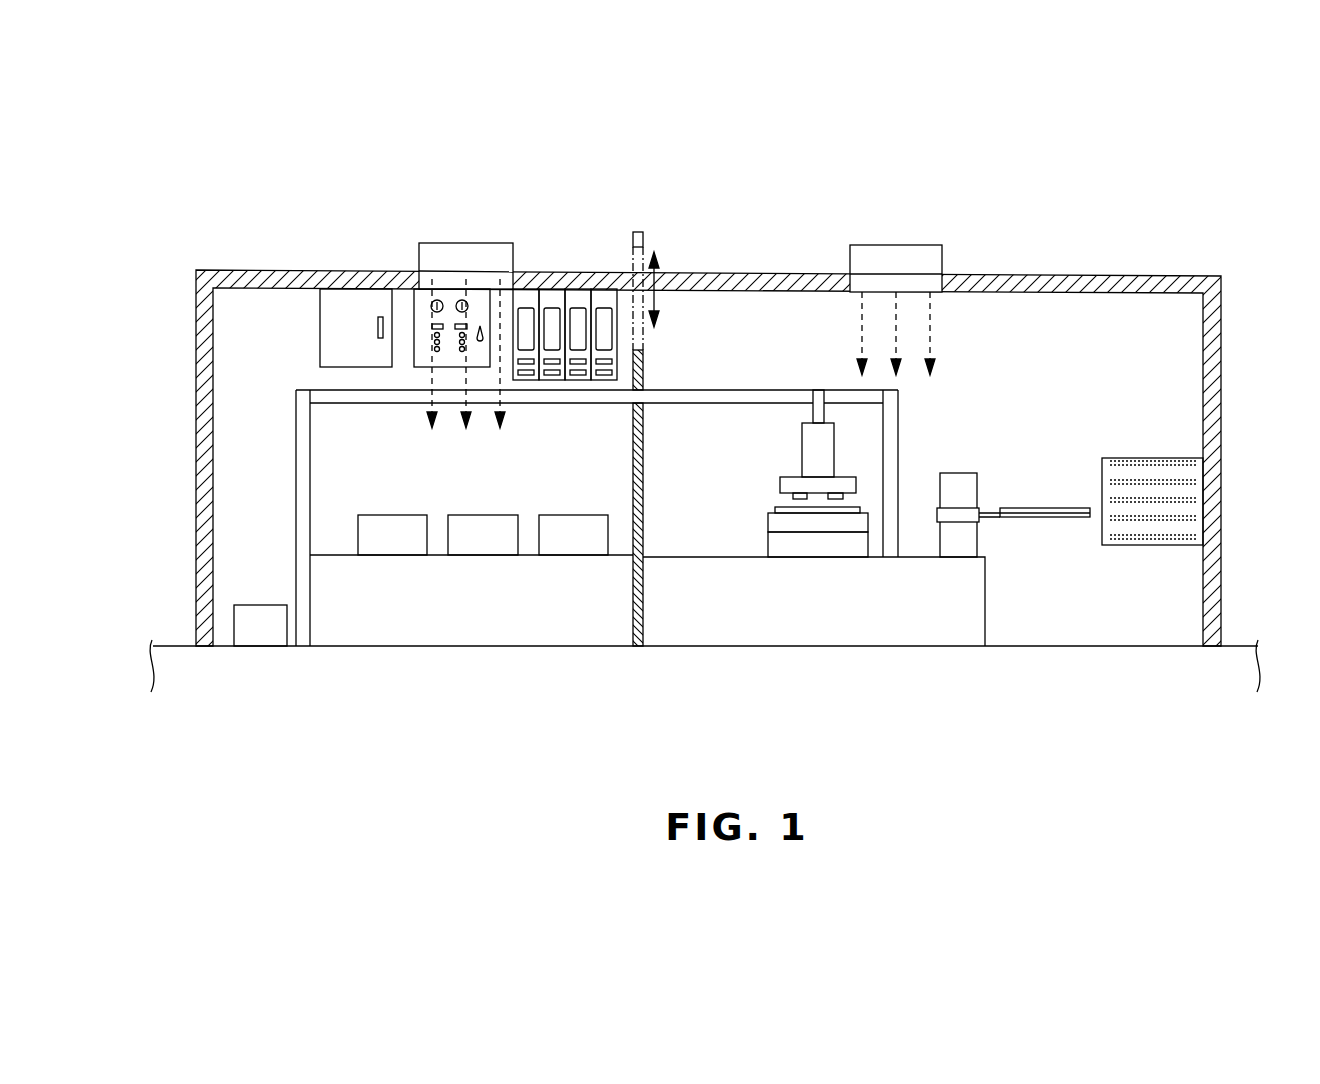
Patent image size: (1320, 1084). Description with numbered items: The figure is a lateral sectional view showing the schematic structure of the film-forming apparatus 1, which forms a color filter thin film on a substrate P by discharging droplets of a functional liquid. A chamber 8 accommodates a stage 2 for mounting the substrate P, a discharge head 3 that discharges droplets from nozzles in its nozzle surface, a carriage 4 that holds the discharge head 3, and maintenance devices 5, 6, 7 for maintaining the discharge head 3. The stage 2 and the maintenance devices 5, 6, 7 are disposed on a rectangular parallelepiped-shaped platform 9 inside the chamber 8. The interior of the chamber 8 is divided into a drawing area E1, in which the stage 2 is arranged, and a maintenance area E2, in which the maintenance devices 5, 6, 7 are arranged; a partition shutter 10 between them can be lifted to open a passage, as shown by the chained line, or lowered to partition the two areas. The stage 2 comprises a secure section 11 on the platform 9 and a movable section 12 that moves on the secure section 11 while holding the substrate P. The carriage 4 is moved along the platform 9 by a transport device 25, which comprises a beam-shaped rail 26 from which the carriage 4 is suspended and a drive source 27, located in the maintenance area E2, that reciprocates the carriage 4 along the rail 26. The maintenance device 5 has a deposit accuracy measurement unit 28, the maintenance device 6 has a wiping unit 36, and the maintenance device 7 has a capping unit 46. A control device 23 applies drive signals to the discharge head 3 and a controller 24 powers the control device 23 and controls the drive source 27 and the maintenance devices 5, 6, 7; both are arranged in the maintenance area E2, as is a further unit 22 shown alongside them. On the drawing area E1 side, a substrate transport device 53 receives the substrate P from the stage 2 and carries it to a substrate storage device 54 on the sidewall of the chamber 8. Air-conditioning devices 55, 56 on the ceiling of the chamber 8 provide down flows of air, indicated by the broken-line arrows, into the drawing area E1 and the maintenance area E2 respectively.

The film-forming apparatus 1 is at (1205, 262).
The stage 2 is at (710, 682).
The discharge head 3 is at (838, 505).
The carriage 4 is at (793, 482).
The maintenance device 5 is at (577, 538).
The maintenance device 6 is at (483, 538).
The maintenance device 7 is at (395, 538).
The chamber 8 is at (1055, 292).
The platform 9 is at (865, 613).
The partition shutter 10 is at (643, 241).
The secure section 11 is at (798, 545).
The movable section 12 is at (782, 523).
The control box 22 is at (350, 305).
The control device 23 is at (420, 318).
The controller 24 is at (577, 285).
The transport device 25 is at (285, 493).
The rail 26 is at (337, 395).
The drive source 27 is at (257, 615).
The deposit accuracy measurement unit 28 is at (573, 515).
The wiping unit 36 is at (482, 515).
The capping unit 46 is at (392, 515).
The substrate transport device 53 is at (960, 472).
The substrate storage device 54 is at (1155, 458).
The air-conditioning device 55 is at (895, 256).
The air-conditioning device 56 is at (455, 252).
The drawing area E1 is at (702, 435).
The maintenance area E2 is at (417, 440).
The substrate P is at (782, 504).